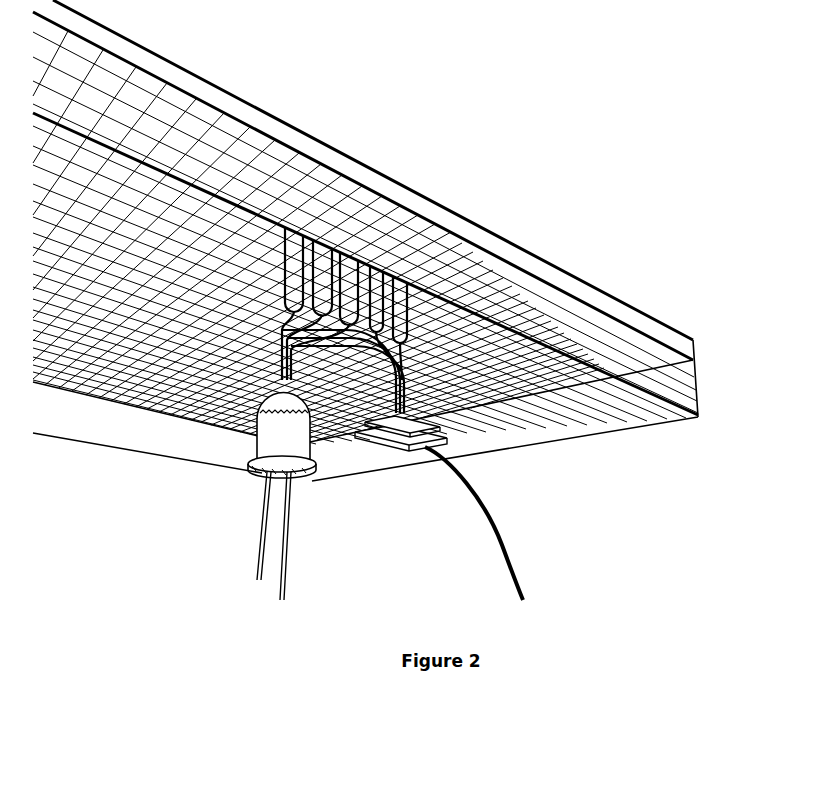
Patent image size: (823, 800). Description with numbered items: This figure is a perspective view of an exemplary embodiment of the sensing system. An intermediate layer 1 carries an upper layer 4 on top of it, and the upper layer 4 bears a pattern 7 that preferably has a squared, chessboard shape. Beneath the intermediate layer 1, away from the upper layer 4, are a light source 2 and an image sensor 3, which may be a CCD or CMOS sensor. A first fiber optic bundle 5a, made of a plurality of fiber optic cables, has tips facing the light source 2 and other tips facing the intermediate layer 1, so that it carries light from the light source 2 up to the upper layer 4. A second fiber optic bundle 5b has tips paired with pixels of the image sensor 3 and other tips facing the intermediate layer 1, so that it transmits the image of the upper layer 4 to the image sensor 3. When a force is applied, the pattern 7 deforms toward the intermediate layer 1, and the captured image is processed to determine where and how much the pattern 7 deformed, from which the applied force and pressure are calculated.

The intermediate layer 1 is at (672, 383).
The light source 2 is at (273, 443).
The image sensor 3 is at (395, 440).
The upper layer 4 is at (505, 246).
The first fiber optic bundle 5a is at (312, 364).
The second fiber optic bundle 5b is at (407, 387).
The pattern 7 is at (375, 210).